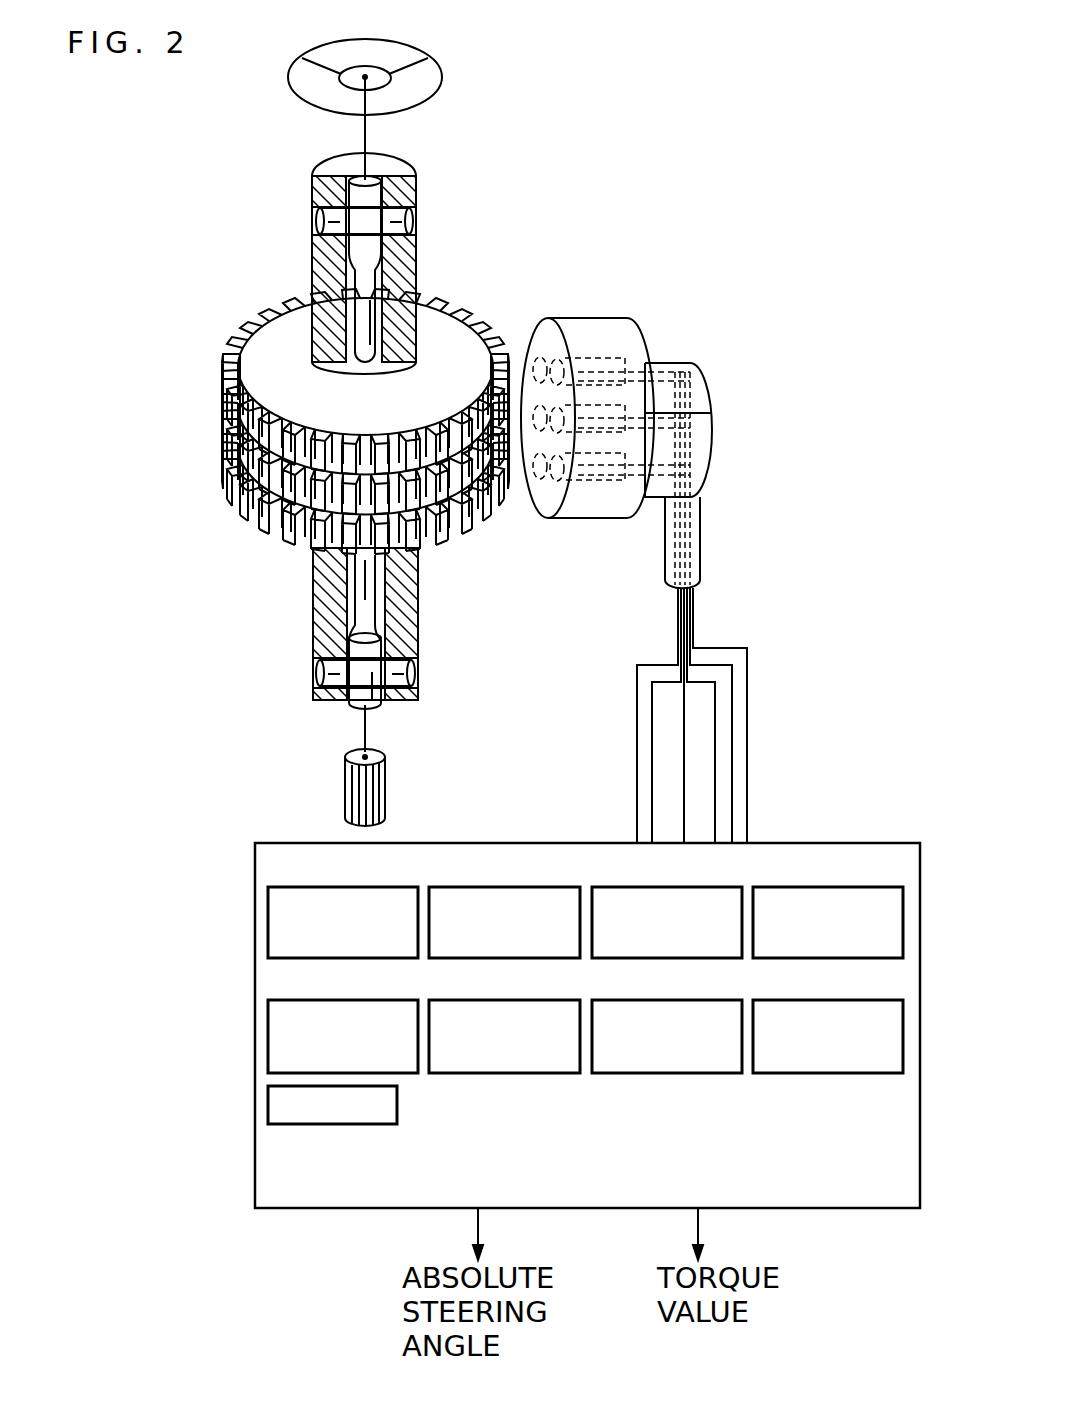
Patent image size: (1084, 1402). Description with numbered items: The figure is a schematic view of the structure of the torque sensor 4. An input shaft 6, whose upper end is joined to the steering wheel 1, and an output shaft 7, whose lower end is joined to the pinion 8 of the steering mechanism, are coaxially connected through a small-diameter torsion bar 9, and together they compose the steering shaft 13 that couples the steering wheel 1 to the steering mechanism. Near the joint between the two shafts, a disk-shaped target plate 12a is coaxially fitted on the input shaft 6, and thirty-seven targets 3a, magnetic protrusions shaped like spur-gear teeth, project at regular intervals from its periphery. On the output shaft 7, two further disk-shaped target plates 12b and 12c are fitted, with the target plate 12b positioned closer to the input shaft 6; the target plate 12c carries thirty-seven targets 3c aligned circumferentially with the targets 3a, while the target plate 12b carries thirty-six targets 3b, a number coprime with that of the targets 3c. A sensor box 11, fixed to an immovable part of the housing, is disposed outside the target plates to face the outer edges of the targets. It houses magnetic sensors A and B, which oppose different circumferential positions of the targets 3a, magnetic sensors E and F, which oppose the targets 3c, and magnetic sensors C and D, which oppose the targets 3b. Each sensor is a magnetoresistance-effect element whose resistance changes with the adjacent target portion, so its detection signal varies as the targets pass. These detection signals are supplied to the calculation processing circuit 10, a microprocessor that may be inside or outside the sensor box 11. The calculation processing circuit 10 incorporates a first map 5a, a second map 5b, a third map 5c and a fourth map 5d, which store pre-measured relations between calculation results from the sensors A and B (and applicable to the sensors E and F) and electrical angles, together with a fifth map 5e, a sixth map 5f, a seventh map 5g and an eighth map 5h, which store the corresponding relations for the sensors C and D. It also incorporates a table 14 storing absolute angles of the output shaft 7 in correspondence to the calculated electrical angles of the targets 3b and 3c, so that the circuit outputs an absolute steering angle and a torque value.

The steering wheel 1 is at (440, 70).
The torque sensor 4 is at (643, 110).
The steering shaft 13 is at (420, 202).
The input shaft 6 is at (413, 250).
The torsion bar 9 is at (357, 285).
The target plate 12a is at (267, 337).
The targets 3a is at (233, 347).
The target plate 12b is at (233, 397).
The targets 3b is at (233, 425).
The target plate 12c is at (233, 480).
The targets 3c is at (257, 516).
The output shaft 7 is at (313, 627).
The pinion 8 is at (347, 778).
The sensor box 11 is at (677, 408).
The magnetic sensor A is at (531, 345).
The magnetic sensor B is at (560, 360).
The magnetic sensor C is at (687, 412).
The magnetic sensor D is at (687, 418).
The magnetic sensor E is at (687, 440).
The magnetic sensor F is at (687, 460).
The calculation processing circuit 10 is at (255, 1112).
The first map 5a is at (340, 887).
The second map 5b is at (502, 887).
The third map 5c is at (663, 887).
The fourth map 5d is at (823, 887).
The fifth map 5e is at (340, 1000).
The sixth map 5f is at (502, 1000).
The seventh map 5g is at (663, 1000).
The eighth map 5h is at (823, 1000).
The table 14 is at (400, 1110).